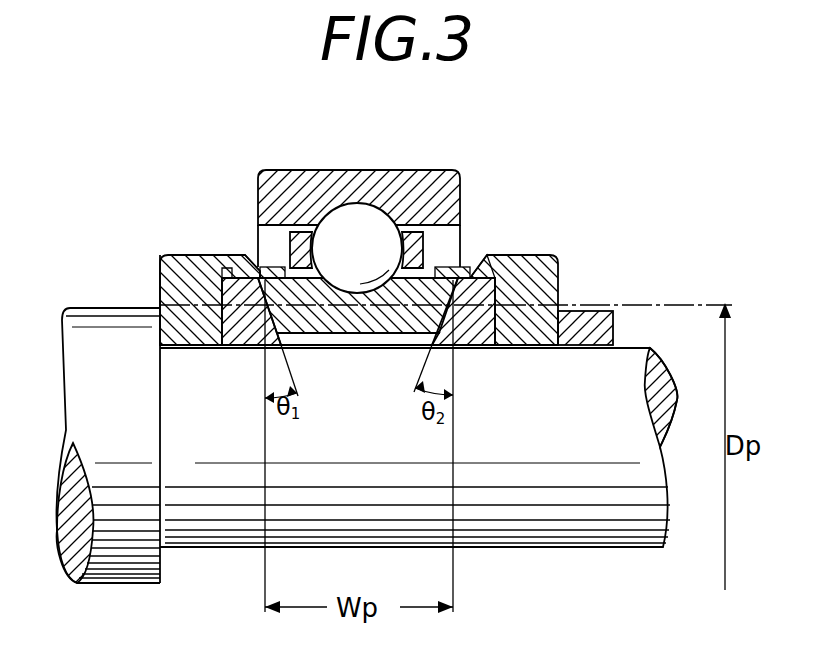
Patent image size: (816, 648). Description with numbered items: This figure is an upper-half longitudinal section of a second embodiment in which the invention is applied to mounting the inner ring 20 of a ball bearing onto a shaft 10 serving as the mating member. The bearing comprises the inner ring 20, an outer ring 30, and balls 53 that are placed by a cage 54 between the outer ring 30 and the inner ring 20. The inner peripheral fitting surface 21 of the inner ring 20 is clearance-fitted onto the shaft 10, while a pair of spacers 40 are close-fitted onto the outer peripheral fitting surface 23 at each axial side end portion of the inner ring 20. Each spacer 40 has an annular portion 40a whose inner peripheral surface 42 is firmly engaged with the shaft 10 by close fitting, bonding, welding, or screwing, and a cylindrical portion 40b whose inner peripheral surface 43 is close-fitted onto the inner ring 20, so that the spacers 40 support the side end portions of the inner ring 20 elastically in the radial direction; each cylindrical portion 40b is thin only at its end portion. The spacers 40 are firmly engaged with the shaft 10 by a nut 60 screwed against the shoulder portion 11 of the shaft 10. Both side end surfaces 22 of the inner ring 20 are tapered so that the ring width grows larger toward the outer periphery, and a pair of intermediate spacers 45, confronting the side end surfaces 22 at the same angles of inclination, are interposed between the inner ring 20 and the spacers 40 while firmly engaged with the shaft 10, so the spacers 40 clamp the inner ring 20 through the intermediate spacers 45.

The shaft 10 is at (631, 358).
The shoulder portion 11 is at (92, 308).
The inner ring 20 is at (328, 322).
The inner peripheral fitting surface 21 is at (357, 334).
The side end surfaces 22 is at (233, 350).
The outer peripheral fitting surface 23 is at (440, 267).
The outer ring 30 is at (310, 170).
The spacer 40 is at (205, 249).
The annular portion 40a is at (158, 257).
The cylindrical portion 40b is at (258, 266).
The inner peripheral surface 42 is at (513, 347).
The inner peripheral surface 43 is at (412, 334).
The intermediate spacer 45 is at (222, 252).
The balls 53 is at (368, 217).
The cage 54 is at (420, 262).
The nut 60 is at (583, 311).